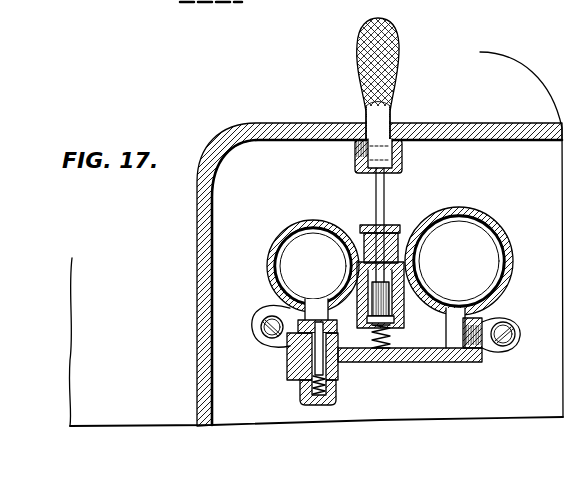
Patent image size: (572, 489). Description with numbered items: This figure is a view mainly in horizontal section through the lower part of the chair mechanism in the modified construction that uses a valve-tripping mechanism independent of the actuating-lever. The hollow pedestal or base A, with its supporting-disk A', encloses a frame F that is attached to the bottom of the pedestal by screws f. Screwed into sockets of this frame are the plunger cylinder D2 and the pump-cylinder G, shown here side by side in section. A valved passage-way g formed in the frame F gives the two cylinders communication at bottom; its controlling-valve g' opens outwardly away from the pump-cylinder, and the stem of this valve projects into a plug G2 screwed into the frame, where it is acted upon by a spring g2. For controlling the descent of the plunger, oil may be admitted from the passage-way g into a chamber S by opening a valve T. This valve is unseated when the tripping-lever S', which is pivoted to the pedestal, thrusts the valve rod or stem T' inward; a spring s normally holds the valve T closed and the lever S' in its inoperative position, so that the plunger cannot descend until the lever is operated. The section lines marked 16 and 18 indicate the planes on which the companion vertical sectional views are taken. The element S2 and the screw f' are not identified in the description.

The hollow pedestal or base A is at (379, 274).
The supporting-disk A' is at (316, 239).
The tripping-lever S' is at (355, 73).
The handle stem S2 is at (366, 102).
The valve rod or stem T' is at (358, 225).
The pump-cylinder G is at (313, 270).
The cylinder D2 is at (459, 277).
The chamber S is at (398, 296).
The spring s is at (392, 337).
The valve T is at (380, 307).
The valved passage-way g is at (410, 369).
The frame F is at (452, 358).
The screws f is at (505, 326).
The screw f' is at (257, 328).
The controlling-valve g' is at (293, 346).
The spring g2 is at (312, 390).
The plug G2 is at (334, 385).
The section line 16 is at (260, 280).
The section lines 18 is at (375, 14).